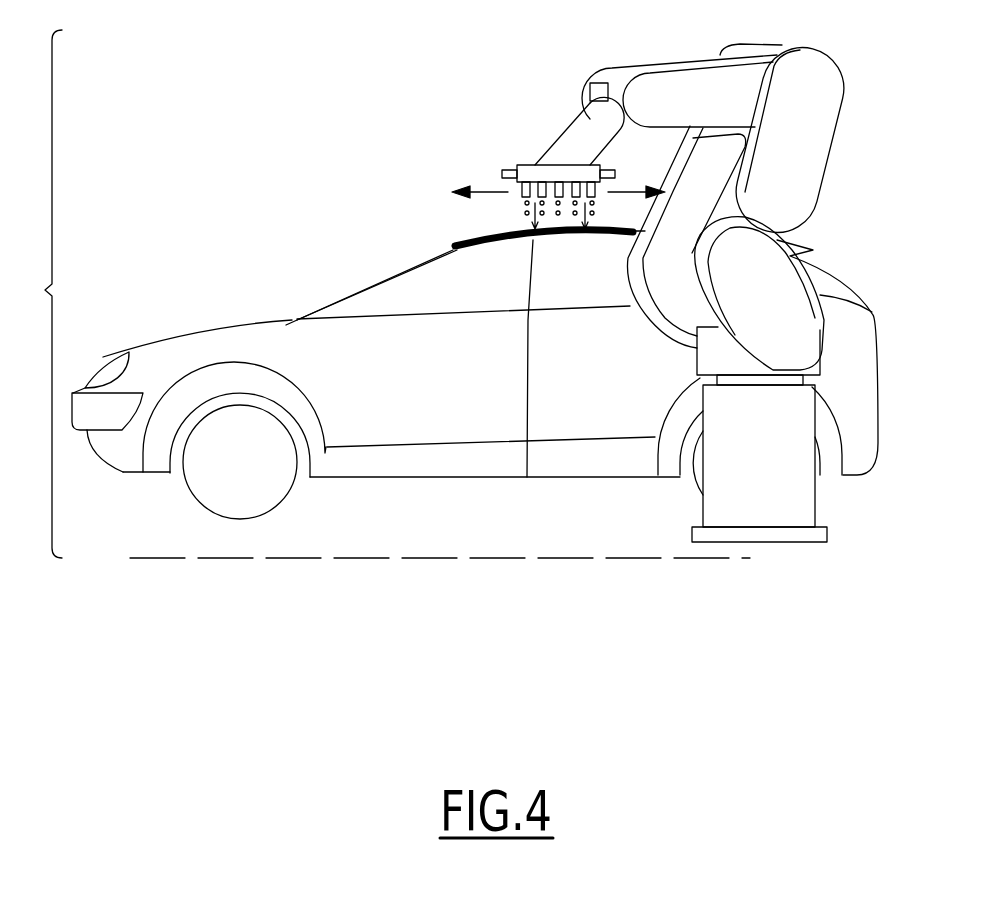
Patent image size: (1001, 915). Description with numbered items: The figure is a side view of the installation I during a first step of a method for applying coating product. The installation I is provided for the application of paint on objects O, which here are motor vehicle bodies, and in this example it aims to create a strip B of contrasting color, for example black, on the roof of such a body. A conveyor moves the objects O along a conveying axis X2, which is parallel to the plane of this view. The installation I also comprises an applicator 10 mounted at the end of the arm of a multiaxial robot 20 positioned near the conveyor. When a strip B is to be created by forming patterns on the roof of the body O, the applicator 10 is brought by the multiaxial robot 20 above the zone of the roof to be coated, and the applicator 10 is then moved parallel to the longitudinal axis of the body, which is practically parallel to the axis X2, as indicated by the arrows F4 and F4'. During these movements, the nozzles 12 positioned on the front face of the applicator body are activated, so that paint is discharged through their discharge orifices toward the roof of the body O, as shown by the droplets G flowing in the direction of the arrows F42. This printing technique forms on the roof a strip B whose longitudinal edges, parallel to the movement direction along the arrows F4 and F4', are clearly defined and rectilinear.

The installation I is at (43, 294).
The object O is at (452, 386).
The strip B is at (515, 242).
The droplets G is at (572, 243).
The multiaxial robot 20 is at (797, 130).
The applicator 10 is at (550, 164).
The nozzles 12 is at (575, 183).
The arrows indicating droplet flow direction F42 is at (520, 207).
The arrow indicating applicator movement direction F4 is at (480, 177).
The arrow indicating opposite applicator movement direction F4' is at (636, 177).
The conveying axis X2 is at (160, 560).